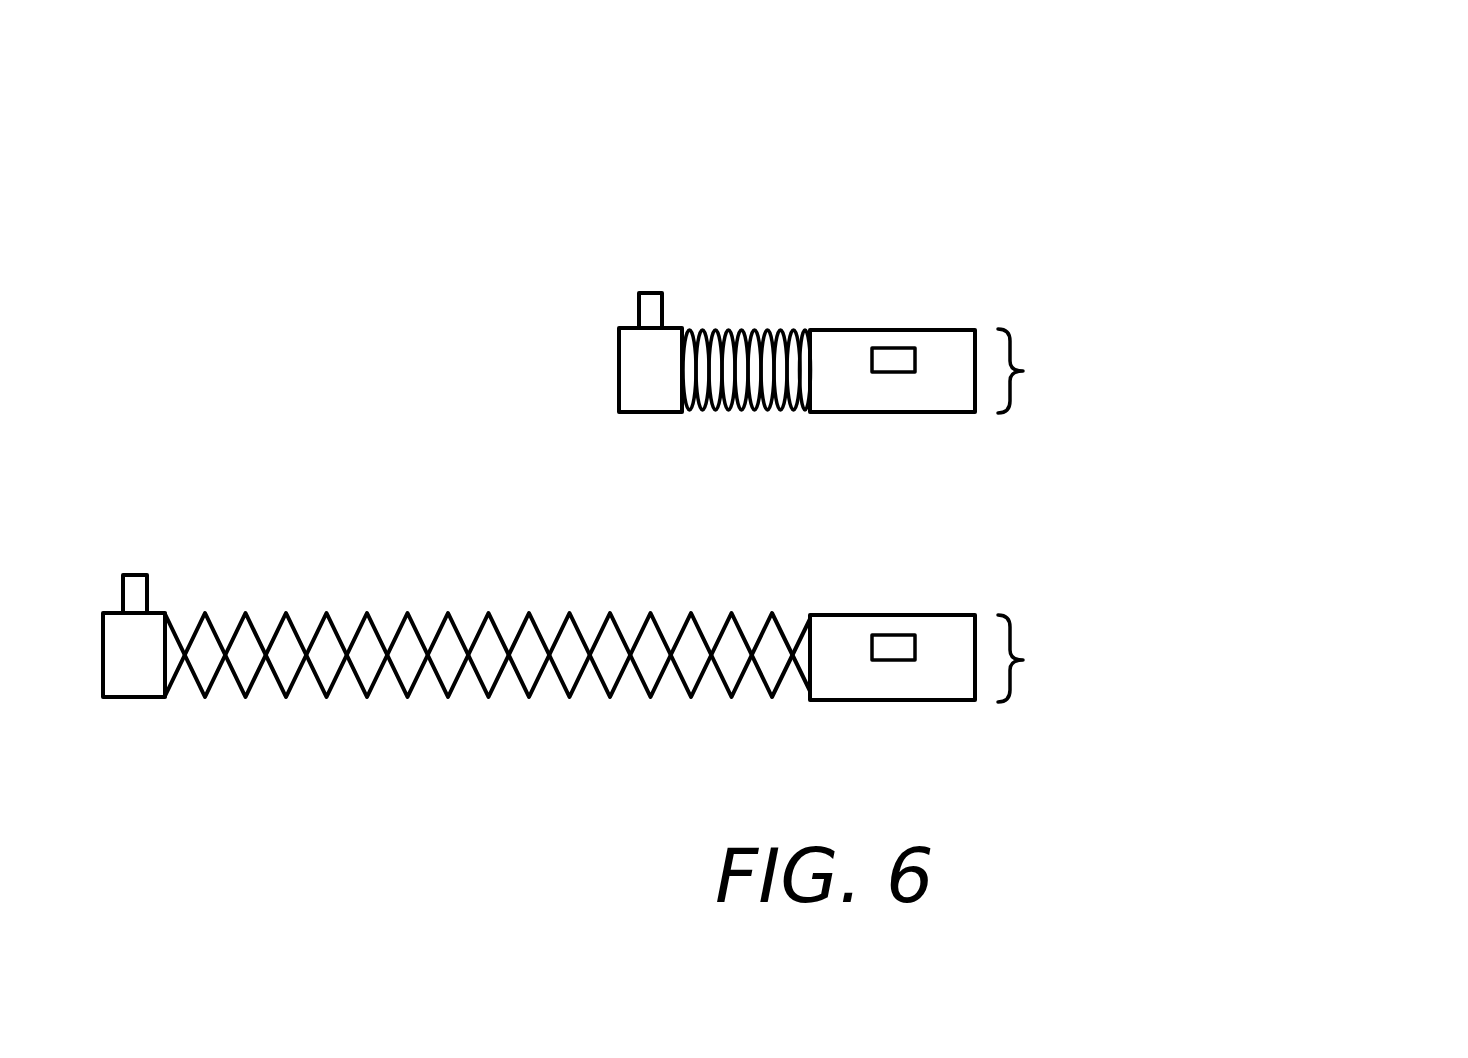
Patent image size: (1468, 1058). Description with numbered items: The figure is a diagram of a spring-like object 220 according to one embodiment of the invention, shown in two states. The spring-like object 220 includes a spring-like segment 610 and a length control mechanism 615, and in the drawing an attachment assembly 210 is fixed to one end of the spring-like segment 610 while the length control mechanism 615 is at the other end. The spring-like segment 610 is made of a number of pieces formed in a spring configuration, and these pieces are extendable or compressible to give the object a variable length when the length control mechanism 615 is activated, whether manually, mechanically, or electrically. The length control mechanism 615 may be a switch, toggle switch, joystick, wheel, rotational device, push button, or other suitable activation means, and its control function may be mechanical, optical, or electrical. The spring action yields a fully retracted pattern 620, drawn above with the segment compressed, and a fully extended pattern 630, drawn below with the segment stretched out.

The spring-like object 220 is at (983, 113).
The attachment assembly 210 is at (630, 388).
The spring-like segment 610 is at (713, 627).
The length control mechanism 615 is at (873, 360).
The fully retracted pattern 620 is at (1220, 371).
The fully extended pattern 630 is at (1211, 658).